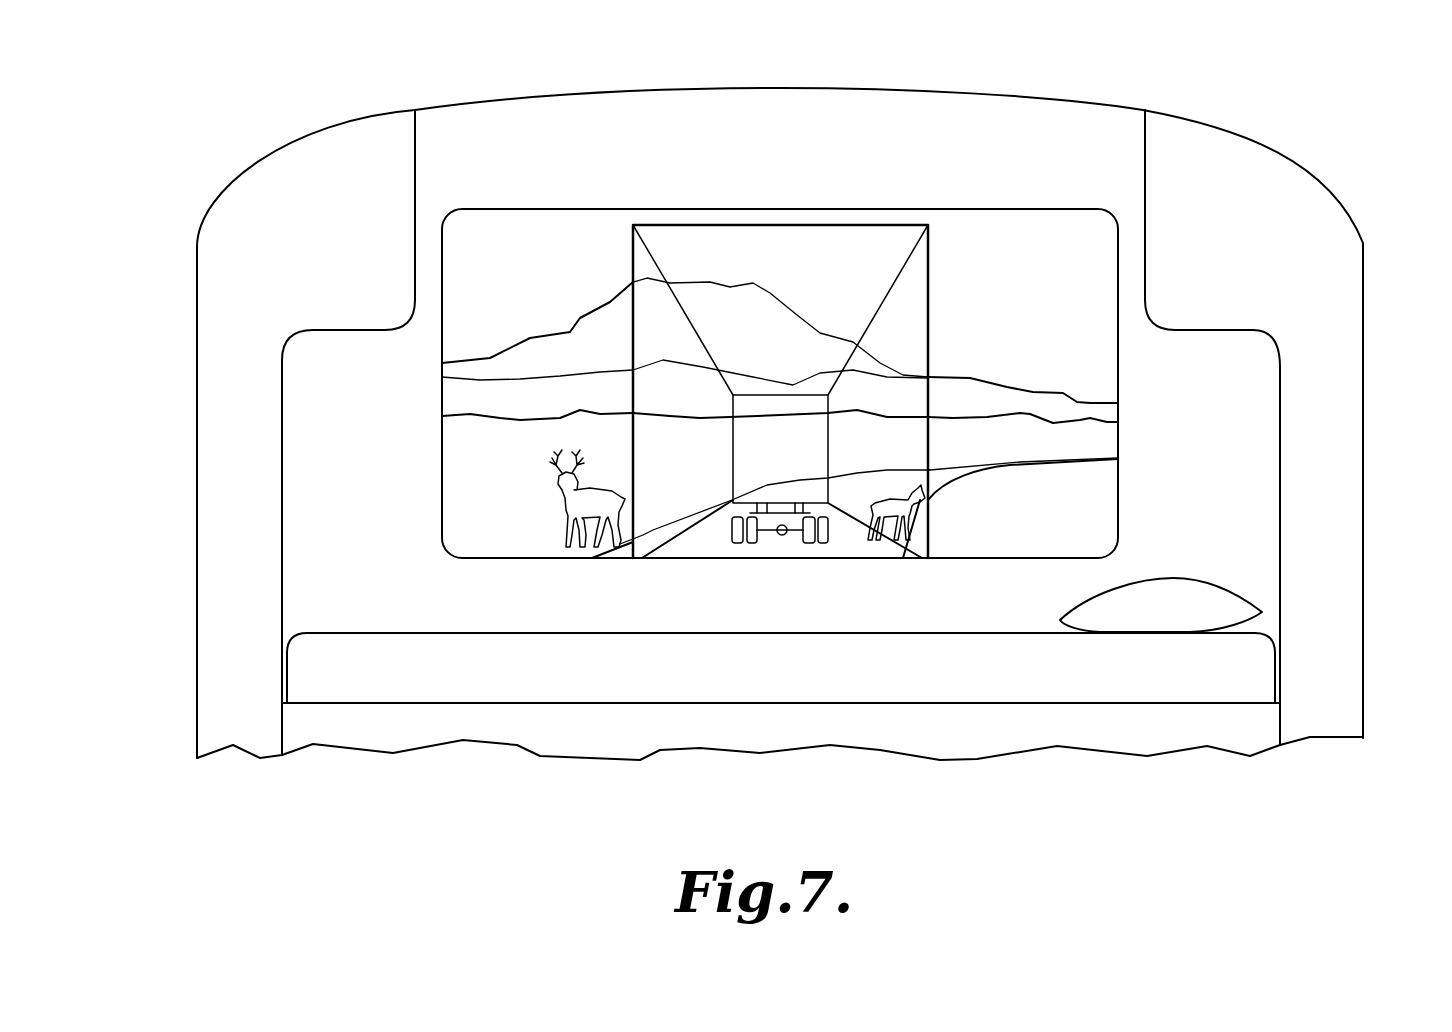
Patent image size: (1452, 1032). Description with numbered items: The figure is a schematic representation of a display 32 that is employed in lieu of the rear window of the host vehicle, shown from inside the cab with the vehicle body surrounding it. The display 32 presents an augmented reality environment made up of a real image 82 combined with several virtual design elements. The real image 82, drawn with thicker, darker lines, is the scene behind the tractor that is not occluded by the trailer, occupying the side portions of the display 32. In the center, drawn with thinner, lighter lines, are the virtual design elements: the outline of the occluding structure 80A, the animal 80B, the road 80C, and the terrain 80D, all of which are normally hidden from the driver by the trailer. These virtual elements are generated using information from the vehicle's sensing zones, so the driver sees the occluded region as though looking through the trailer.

The display 32 is at (552, 210).
The real image 82 is at (498, 332).
The outline of the occluding structure 80A is at (887, 224).
The animal 80B is at (927, 503).
The road 80C is at (885, 488).
The terrain 80D is at (880, 392).